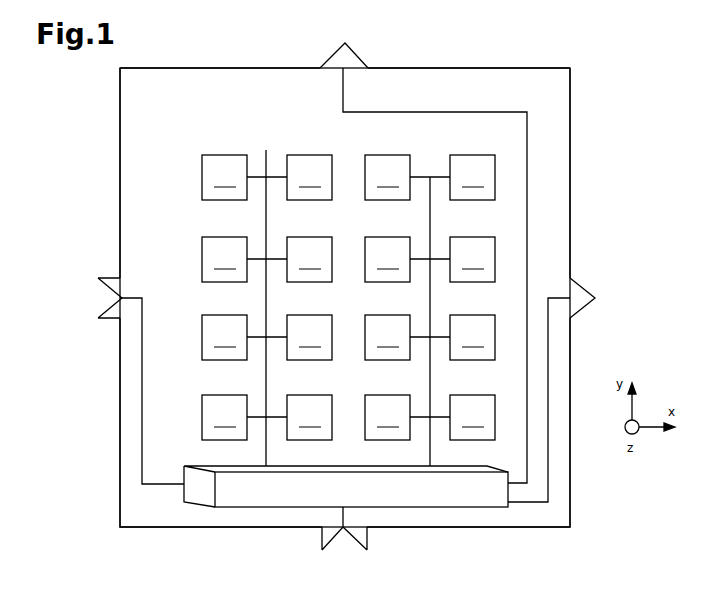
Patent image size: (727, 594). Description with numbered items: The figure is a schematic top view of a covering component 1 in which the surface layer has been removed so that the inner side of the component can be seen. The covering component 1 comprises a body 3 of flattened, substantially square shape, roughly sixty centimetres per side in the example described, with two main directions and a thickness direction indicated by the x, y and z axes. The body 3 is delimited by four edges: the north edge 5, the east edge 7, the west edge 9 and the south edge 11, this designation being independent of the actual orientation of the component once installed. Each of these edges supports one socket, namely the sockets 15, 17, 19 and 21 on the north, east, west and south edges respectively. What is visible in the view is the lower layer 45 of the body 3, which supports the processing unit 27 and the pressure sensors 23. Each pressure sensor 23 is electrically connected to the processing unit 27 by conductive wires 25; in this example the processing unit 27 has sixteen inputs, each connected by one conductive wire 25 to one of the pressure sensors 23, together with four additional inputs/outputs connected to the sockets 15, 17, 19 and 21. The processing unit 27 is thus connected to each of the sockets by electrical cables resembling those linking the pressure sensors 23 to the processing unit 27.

The covering component 1 is at (612, 97).
The body 3 is at (571, 487).
The north edge 5 is at (220, 68).
The east edge 7 is at (571, 190).
The west edge 9 is at (120, 493).
The south edge 11 is at (480, 527).
The socket 15 is at (352, 61).
The socket 17 is at (593, 283).
The socket 19 is at (112, 323).
The socket 21 is at (321, 538).
The pressure sensors 23 is at (348, 297).
The conductive wires 25 is at (266, 152).
The processing unit 27 is at (353, 498).
The lower layer 45 is at (172, 123).